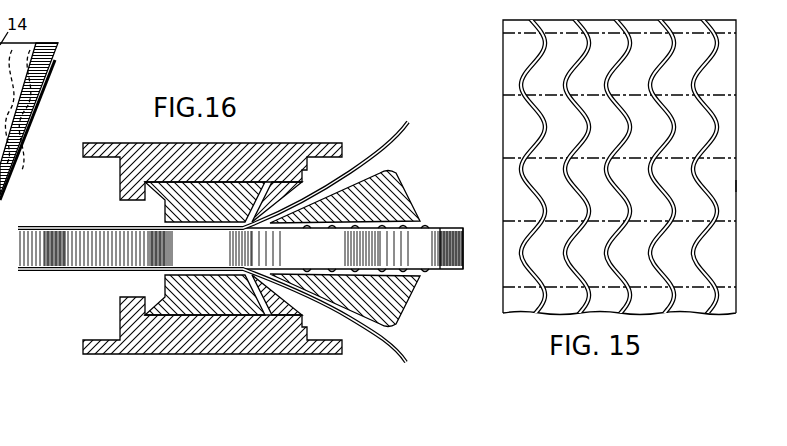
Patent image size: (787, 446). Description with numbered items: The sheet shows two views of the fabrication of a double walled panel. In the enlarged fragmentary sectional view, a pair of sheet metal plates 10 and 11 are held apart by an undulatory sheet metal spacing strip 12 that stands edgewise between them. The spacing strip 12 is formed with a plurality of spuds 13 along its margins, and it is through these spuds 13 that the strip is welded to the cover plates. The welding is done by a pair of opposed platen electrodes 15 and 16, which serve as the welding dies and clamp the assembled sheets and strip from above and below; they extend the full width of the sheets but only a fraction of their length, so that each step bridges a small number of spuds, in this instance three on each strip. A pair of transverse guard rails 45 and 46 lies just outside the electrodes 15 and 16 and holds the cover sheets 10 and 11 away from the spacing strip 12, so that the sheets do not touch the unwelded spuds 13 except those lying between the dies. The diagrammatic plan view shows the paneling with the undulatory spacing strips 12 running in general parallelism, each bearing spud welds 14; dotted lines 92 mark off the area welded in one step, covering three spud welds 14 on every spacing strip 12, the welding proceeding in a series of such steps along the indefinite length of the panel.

In FIG. 16, the sheet metal plate 10 is at (40, 228).
In FIG. 16, the sheet metal plate 11 is at (57, 270).
In FIG. 16, the undulatory sheet metal spacing strip 12 is at (456, 230).
In FIG. 15, the undulatory sheet metal spacing strip 12 is at (540, 111).
In FIG. 16, the spud 13 is at (424, 226).
In FIG. 16, the spud weld 14 is at (90, 229).
In FIG. 15, the spud weld 14 is at (707, 145).
In FIG. 16, the platen electrode 15 is at (163, 212).
In FIG. 16, the platen electrode 16 is at (163, 285).
In FIG. 16, the guard rail 45 is at (397, 176).
In FIG. 16, the guard rail 46 is at (406, 300).
In FIG. 15, the dotted line 92 is at (720, 217).